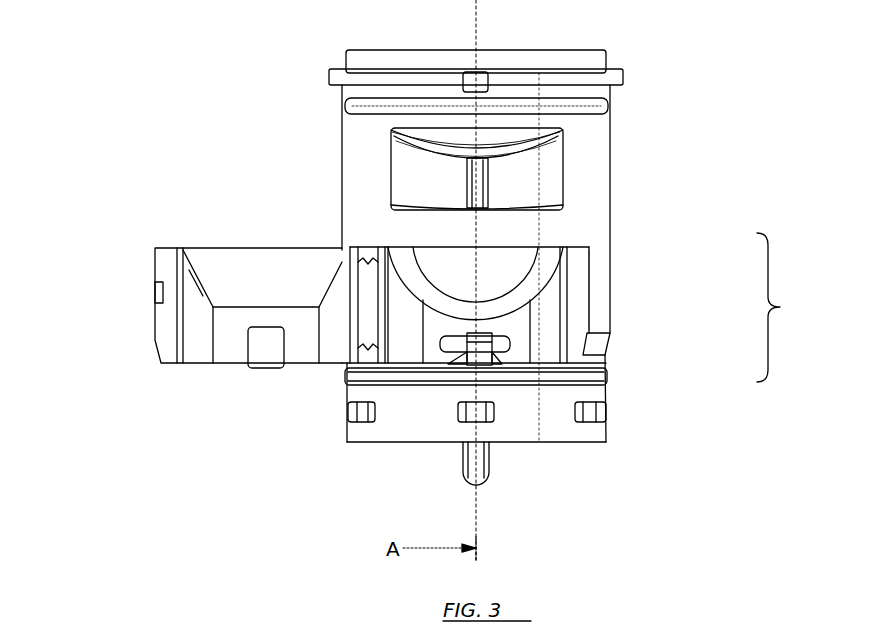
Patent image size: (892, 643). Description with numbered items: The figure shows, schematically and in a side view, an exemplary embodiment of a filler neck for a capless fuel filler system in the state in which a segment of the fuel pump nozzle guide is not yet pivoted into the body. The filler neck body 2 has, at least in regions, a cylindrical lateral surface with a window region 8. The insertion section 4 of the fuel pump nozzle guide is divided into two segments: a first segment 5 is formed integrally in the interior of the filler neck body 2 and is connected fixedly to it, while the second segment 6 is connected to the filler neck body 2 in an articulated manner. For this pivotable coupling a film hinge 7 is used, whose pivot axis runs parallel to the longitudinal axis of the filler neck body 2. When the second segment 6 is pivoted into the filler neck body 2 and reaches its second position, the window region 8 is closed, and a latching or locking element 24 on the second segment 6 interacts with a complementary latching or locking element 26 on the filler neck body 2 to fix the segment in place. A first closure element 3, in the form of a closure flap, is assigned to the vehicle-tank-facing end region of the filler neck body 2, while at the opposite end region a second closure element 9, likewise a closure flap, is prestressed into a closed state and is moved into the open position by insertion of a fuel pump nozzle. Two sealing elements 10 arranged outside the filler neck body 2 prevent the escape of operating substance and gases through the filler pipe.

The filler neck body 2 is at (572, 213).
The first closure element 3 is at (470, 355).
The insertion section 4 is at (780, 307).
The first segment 5 is at (542, 317).
The second segment 6 is at (237, 277).
The film hinge 7 is at (370, 296).
The window region 8 is at (415, 258).
The second closure element 9 is at (436, 148).
The sealing element 10 is at (550, 103).
The latching or locking element 24 is at (157, 284).
The latching or locking element 26 is at (567, 290).